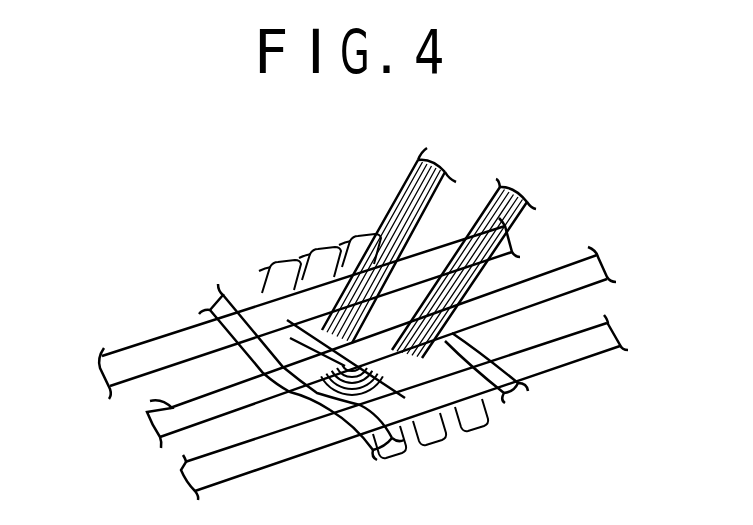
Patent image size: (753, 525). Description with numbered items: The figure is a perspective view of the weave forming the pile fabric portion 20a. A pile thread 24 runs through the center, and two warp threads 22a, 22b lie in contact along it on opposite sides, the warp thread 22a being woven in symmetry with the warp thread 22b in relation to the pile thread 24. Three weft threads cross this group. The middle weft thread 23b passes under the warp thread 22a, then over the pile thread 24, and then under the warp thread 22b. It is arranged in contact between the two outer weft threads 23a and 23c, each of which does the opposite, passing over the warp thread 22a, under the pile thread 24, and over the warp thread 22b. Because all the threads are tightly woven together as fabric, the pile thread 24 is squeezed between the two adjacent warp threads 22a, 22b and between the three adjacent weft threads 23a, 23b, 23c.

The pile fabric portion 20a is at (172, 228).
The warp thread 22a is at (305, 282).
The warp thread 22b is at (482, 401).
The weft thread 23a is at (130, 362).
The weft thread 23b is at (149, 406).
The weft thread 23c is at (183, 465).
The pile thread 24 is at (409, 197).